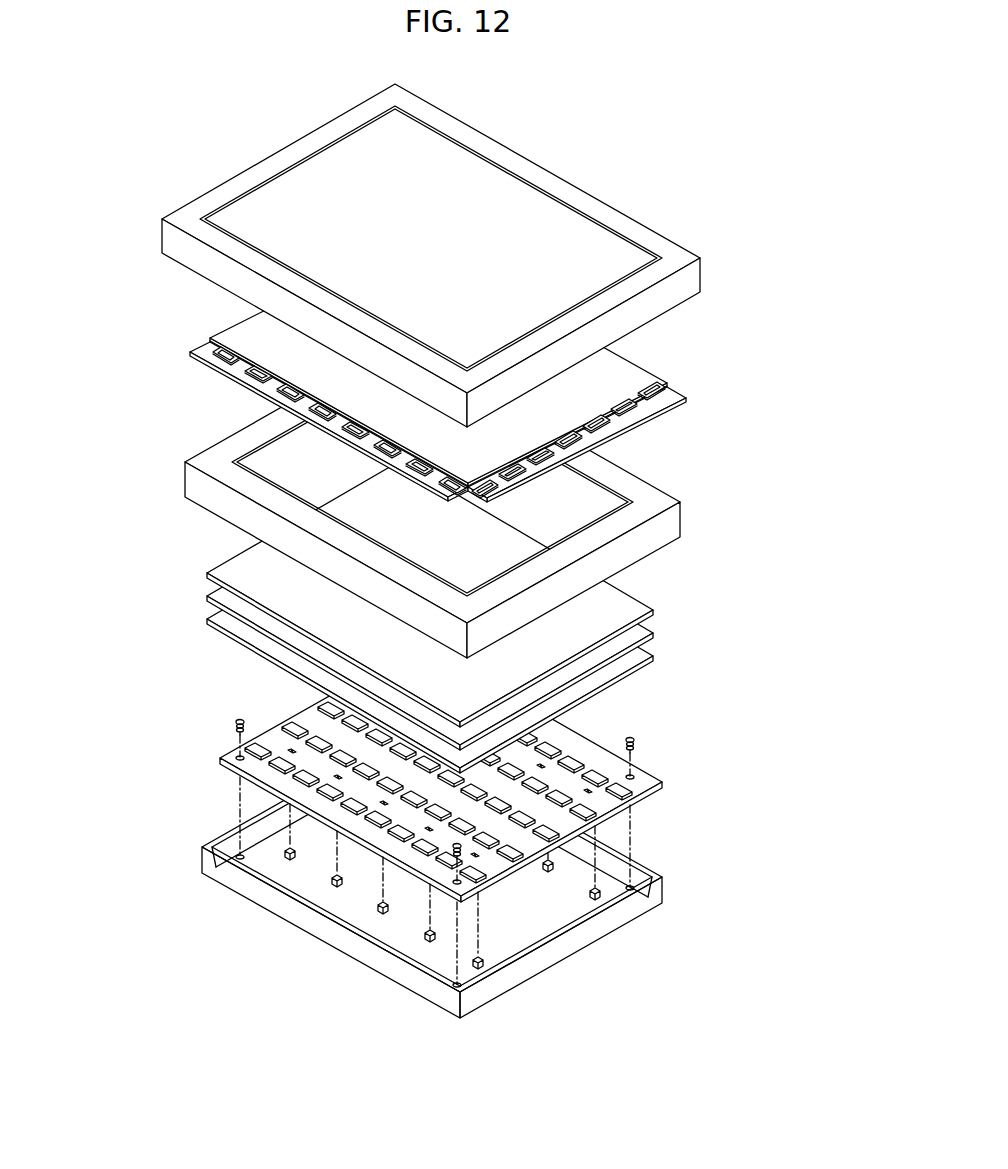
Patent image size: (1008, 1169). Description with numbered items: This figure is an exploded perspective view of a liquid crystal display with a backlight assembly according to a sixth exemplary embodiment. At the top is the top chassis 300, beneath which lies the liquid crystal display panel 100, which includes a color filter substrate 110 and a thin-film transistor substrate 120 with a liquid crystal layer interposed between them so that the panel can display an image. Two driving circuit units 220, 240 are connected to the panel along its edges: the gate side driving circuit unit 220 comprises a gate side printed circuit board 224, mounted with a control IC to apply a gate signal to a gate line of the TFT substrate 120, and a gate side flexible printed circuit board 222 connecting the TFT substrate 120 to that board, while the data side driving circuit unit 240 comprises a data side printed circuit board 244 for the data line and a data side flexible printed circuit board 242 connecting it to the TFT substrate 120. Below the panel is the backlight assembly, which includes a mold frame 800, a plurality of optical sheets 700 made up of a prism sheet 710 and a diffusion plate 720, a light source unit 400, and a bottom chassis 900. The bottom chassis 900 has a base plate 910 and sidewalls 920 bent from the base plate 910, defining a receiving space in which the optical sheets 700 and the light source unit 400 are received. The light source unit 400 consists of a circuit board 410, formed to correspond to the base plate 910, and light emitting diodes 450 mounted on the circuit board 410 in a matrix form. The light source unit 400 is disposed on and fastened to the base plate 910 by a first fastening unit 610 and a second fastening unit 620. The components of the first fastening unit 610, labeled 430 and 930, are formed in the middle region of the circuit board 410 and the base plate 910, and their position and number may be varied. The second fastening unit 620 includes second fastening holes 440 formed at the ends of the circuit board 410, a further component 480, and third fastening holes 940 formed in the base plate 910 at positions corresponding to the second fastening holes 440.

The top chassis 300 is at (714, 243).
The liquid crystal display panel 100 is at (510, 363).
The color filter substrate 110 is at (633, 370).
The thin-film transistor substrate 120 is at (669, 384).
The driving circuit unit 220 is at (639, 441).
The gate side flexible printed circuit board 222 is at (667, 387).
The gate side printed circuit board 224 is at (680, 400).
The driving circuit unit 240 is at (250, 413).
The data side flexible printed circuit board 242 is at (210, 337).
The data side printed circuit board 244 is at (187, 353).
The mold frame 800 is at (680, 516).
The optical sheets 700 is at (425, 617).
The prism sheet 710 is at (207, 595).
The diffusion plate 720 is at (207, 618).
The light source unit 400 is at (481, 773).
The circuit board 410 is at (275, 730).
The coupling hole 430 is at (290, 752).
The second fastening holes 440 is at (230, 748).
The light emitting diodes 450 is at (290, 775).
The screw 480 is at (235, 725).
The bottom chassis 900 is at (487, 875).
The base plate 910 is at (297, 887).
The sidewalls 920 is at (337, 933).
The boss 930 is at (428, 942).
The third fastening holes 940 is at (466, 978).
The first fastening unit 610 is at (493, 898).
The second fastening unit 620 is at (500, 876).